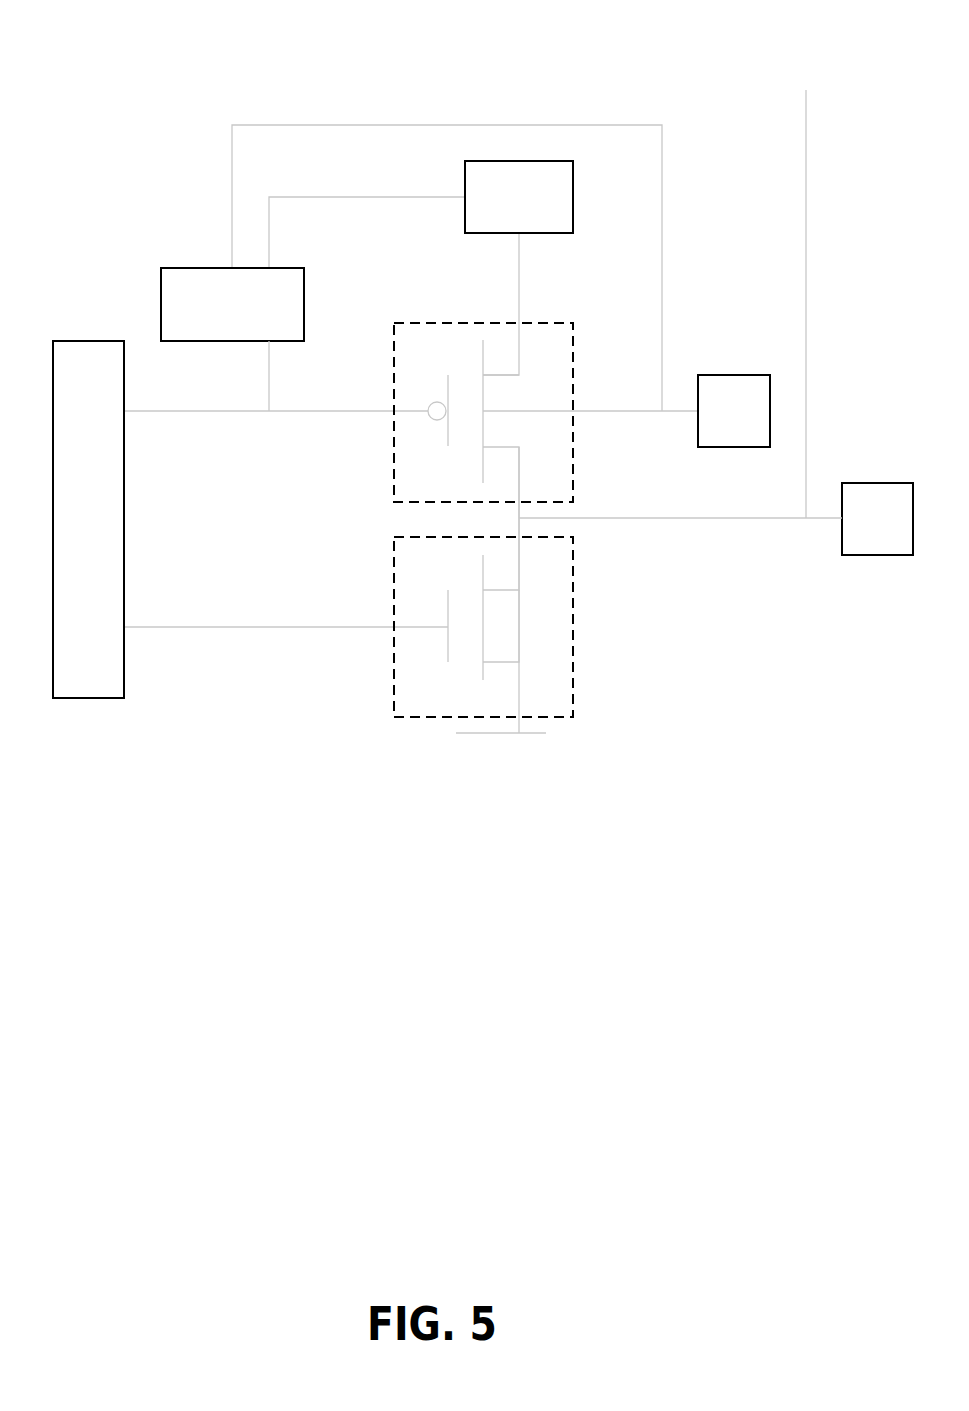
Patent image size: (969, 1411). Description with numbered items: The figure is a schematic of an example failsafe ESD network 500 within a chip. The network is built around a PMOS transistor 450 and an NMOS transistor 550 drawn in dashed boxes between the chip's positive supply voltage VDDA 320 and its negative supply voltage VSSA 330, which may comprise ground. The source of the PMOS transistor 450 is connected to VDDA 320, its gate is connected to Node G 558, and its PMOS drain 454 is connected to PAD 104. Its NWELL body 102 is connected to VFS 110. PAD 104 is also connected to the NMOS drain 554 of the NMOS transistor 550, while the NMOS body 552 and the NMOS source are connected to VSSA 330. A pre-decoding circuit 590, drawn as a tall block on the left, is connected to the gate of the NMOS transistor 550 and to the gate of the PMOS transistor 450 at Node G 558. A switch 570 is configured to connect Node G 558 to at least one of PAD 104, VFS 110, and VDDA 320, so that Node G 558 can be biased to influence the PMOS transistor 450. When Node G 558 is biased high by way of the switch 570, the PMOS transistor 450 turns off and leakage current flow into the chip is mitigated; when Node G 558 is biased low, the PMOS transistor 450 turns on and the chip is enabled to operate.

The failsafe ESD network 500 is at (143, 41).
The switch 570 is at (161, 302).
The VDDA 320 is at (483, 235).
The NWELL body 102 is at (518, 410).
The VFS 110 is at (735, 448).
The PAD 104 is at (877, 556).
The PMOS drain 454 is at (519, 483).
The NMOS drain 554 is at (519, 555).
The NMOS body 552 is at (519, 626).
The VSSA 330 is at (481, 734).
The NMOS transistor 550 is at (394, 662).
The pre-decoding circuit 590 is at (89, 698).
The PMOS transistor 450 is at (394, 448).
The Node G 558 is at (304, 412).